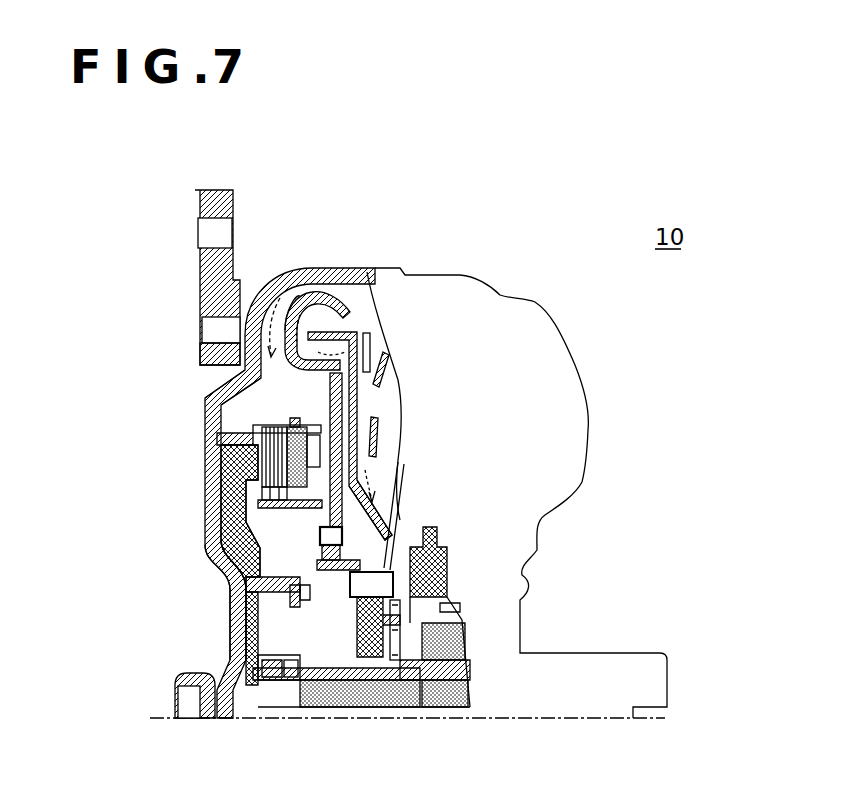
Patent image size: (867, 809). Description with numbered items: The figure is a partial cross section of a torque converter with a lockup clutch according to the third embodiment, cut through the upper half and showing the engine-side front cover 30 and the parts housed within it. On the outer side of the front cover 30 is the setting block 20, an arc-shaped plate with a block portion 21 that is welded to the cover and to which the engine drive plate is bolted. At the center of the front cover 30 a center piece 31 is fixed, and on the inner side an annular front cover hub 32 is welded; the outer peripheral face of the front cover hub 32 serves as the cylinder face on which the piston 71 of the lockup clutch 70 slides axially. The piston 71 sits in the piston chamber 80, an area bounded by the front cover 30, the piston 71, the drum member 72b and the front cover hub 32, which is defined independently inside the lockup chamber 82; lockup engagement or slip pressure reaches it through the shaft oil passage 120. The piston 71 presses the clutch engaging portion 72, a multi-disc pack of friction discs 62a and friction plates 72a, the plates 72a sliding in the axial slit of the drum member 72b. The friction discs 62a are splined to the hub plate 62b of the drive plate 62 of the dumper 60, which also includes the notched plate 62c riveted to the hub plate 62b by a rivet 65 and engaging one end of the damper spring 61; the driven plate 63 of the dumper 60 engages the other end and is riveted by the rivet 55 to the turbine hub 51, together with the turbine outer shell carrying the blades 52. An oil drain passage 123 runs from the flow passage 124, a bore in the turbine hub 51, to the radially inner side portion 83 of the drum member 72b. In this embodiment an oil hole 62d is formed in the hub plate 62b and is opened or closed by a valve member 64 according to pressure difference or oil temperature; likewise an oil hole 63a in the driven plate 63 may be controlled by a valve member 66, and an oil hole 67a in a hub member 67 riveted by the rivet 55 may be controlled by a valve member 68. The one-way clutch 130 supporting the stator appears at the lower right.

The setting block 20 is at (195, 264).
The block portion 21 is at (205, 357).
The front cover 30 is at (207, 472).
The center piece 31 is at (178, 680).
The front cover hub 32 is at (229, 637).
The turbine hub 51 is at (290, 658).
The blade 52 is at (392, 372).
The rivet 55 is at (360, 605).
The dumper 60 is at (311, 290).
The damper spring 61 is at (366, 333).
The drive plate 62 is at (330, 300).
The friction disc 62a is at (294, 418).
The hub plate 62b is at (270, 505).
The plate 62c is at (380, 433).
The oil hole 62d is at (372, 470).
The driven plate 63 is at (355, 395).
The oil hole 63a is at (395, 505).
The valve member 64 is at (320, 537).
The rivet 65 is at (336, 563).
The valve member 66 is at (412, 524).
The hub member 67 is at (355, 568).
The oil hole 67a is at (425, 548).
The valve member 68 is at (352, 592).
The lockup clutch 70 is at (255, 426).
The piston 71 is at (207, 517).
The clutch engaging portion 72 is at (300, 430).
The friction plate 72a is at (240, 393).
The drum member 72b is at (235, 433).
The piston chamber 80 is at (222, 552).
The lockup chamber 82 is at (282, 290).
The radially inner side portion 83 is at (230, 582).
The shaft oil passage 120 is at (235, 600).
The oil drain passage 123 is at (430, 705).
The flow passage 124 is at (350, 710).
The one-way clutch 130 is at (458, 610).